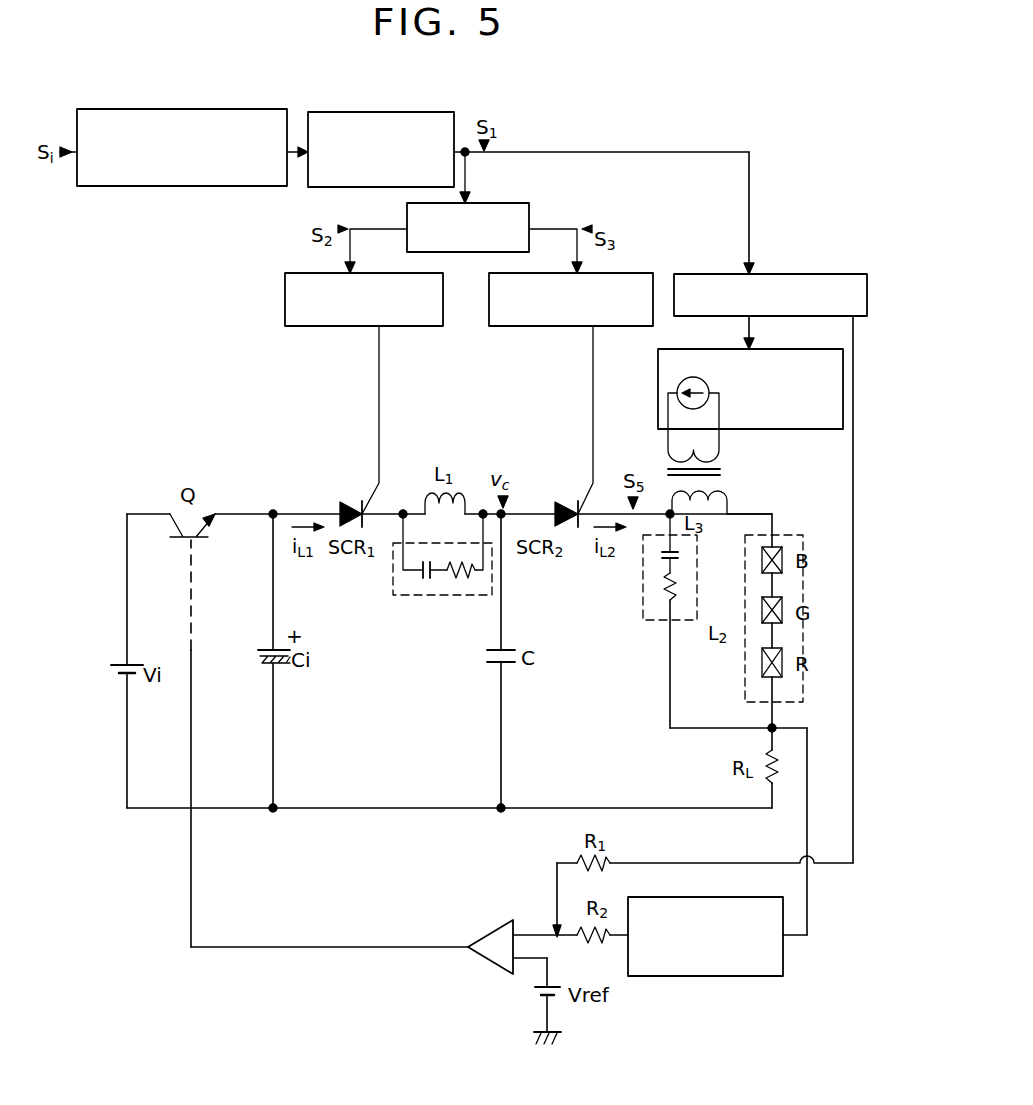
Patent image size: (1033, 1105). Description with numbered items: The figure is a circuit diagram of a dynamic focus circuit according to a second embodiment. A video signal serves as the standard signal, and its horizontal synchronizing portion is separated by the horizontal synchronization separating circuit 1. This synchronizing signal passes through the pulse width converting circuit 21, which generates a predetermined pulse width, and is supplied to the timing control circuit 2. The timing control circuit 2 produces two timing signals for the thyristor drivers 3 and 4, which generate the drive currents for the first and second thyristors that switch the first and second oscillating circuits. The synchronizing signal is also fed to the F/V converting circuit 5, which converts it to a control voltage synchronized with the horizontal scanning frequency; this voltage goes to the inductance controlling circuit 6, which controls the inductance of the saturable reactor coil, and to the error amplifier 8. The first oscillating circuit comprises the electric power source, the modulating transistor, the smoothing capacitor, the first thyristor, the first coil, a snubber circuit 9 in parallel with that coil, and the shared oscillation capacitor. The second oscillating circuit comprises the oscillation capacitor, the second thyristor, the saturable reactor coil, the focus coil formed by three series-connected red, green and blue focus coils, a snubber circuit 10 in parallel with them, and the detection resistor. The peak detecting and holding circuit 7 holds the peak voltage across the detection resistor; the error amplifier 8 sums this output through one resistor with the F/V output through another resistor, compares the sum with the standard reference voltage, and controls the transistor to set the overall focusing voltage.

The horizontal synchronization separating circuit 1 is at (252, 109).
The pulse width converting circuit 21 is at (395, 112).
The timing control circuit 2 is at (530, 214).
The thyristor driver 3 is at (443, 286).
The thyristor driver 4 is at (632, 273).
The F/V converting circuit 5 is at (788, 274).
The inductance controlling circuit 6 is at (778, 349).
The peak detecting and holding circuit 7 is at (730, 897).
The error amplifier 8 is at (499, 922).
The snubber circuit 9 is at (425, 596).
The snubber circuit 10 is at (645, 621).